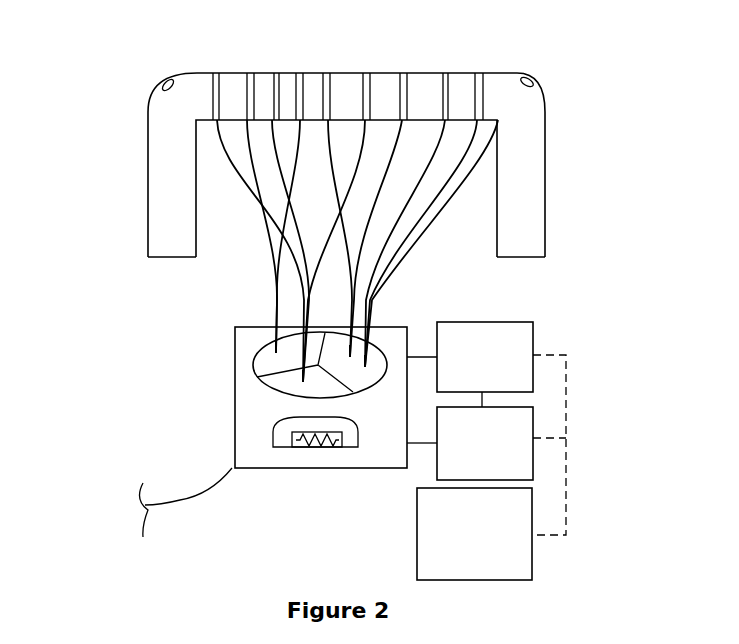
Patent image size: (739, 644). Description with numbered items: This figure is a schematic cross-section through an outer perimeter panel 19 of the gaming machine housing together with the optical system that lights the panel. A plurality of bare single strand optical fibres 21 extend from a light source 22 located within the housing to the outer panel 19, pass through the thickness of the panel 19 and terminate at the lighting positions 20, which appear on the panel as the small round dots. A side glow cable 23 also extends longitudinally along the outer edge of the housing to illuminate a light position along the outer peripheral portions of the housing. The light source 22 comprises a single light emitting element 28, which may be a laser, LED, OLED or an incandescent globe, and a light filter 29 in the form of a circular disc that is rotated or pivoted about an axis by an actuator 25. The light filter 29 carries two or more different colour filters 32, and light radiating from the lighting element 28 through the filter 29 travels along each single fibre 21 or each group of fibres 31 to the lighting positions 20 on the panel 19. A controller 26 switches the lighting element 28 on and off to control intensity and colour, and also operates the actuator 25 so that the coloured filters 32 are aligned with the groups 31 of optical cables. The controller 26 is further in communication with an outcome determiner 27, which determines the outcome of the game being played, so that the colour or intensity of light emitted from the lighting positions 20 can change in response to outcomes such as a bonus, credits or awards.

The outer perimeter panel 19 is at (168, 175).
The lighting positions (dots) 20 is at (220, 72).
The bare strand optical fibres 21 is at (330, 225).
The light source 22 is at (235, 440).
The side glow cable 23 is at (533, 82).
The actuator 25 is at (537, 340).
The controller 26 is at (533, 418).
The outcome determiner 27 is at (532, 567).
The lighting element 28 is at (283, 448).
The light filter 29 is at (255, 362).
The group of fibres 31 is at (275, 312).
The colour filters 32 is at (380, 367).